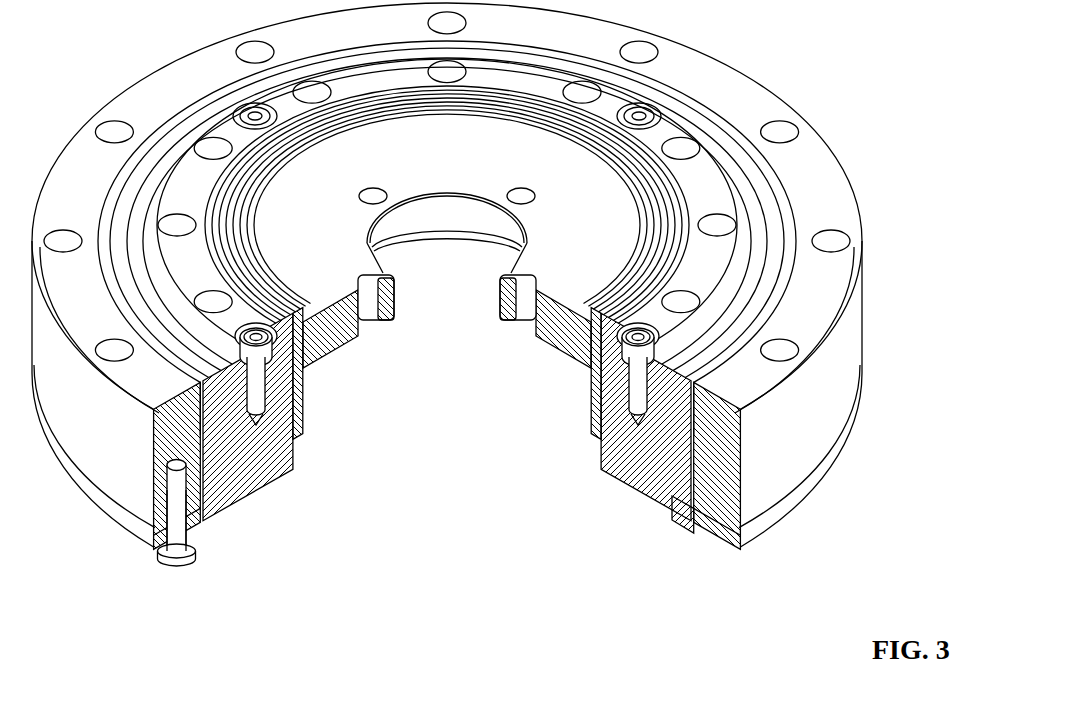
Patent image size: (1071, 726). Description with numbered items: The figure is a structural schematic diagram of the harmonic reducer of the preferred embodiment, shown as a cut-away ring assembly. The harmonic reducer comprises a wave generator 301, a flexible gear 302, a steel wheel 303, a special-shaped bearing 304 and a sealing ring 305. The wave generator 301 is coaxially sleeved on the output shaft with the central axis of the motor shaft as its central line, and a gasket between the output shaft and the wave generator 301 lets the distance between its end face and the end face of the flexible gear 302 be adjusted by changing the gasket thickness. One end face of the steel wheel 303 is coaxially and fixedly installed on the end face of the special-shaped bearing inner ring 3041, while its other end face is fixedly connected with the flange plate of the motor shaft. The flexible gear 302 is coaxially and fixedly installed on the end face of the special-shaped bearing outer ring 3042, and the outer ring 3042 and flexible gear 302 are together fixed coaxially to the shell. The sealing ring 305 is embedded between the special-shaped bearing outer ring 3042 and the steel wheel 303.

The wave generator 301 is at (557, 362).
The flexible gear 302 is at (677, 517).
The steel wheel 303 is at (598, 450).
The special-shaped bearing 304 is at (410, 373).
The special-shaped bearing inner ring 3041 is at (268, 470).
The special-shaped bearing outer ring 3042 is at (185, 452).
The sealing ring 305 is at (695, 515).